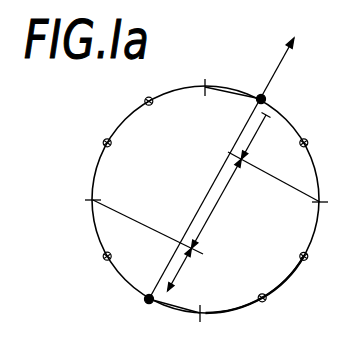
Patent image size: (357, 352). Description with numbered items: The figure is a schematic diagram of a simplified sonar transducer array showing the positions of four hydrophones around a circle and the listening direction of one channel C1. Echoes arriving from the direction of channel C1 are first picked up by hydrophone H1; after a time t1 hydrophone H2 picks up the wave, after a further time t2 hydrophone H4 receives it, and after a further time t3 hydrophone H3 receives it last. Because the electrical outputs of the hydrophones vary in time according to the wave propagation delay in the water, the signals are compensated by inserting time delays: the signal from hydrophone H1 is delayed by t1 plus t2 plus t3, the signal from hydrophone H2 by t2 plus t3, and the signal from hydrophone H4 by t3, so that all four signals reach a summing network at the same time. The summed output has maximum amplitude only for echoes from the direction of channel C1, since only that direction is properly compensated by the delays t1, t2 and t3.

The channel C1 is at (234, 155).
The hydrophone H1 is at (230, 73).
The hydrophone H2 is at (291, 187).
The hydrophone H3 is at (185, 325).
The hydrophone H4 is at (127, 221).
The time t1 is at (255, 136).
The time t2 is at (216, 203).
The time t3 is at (182, 269).